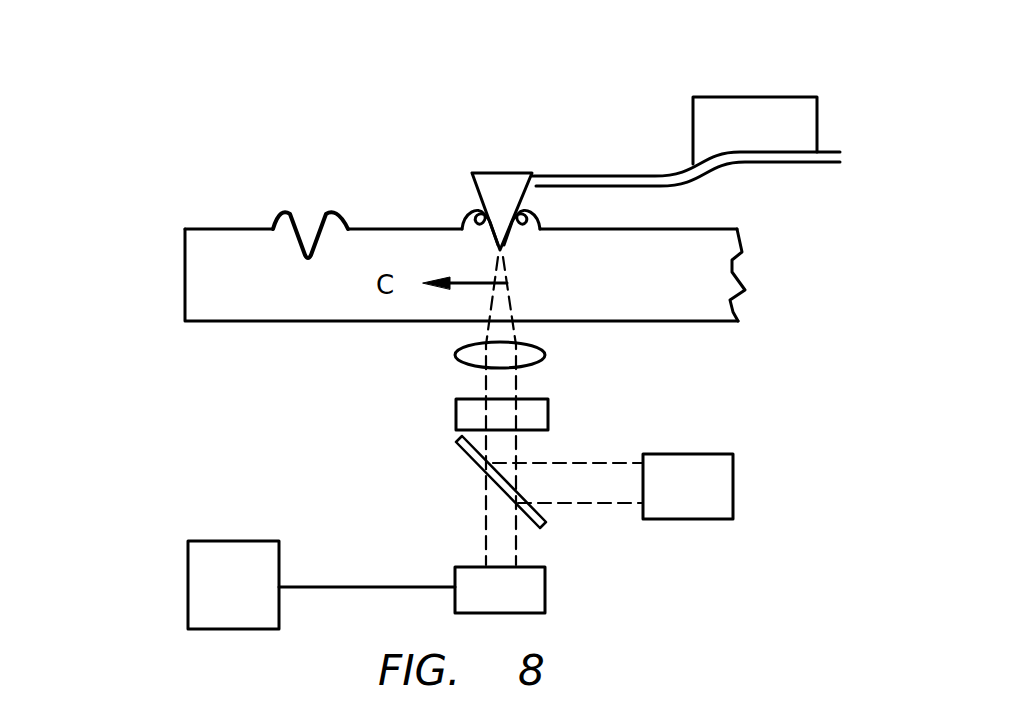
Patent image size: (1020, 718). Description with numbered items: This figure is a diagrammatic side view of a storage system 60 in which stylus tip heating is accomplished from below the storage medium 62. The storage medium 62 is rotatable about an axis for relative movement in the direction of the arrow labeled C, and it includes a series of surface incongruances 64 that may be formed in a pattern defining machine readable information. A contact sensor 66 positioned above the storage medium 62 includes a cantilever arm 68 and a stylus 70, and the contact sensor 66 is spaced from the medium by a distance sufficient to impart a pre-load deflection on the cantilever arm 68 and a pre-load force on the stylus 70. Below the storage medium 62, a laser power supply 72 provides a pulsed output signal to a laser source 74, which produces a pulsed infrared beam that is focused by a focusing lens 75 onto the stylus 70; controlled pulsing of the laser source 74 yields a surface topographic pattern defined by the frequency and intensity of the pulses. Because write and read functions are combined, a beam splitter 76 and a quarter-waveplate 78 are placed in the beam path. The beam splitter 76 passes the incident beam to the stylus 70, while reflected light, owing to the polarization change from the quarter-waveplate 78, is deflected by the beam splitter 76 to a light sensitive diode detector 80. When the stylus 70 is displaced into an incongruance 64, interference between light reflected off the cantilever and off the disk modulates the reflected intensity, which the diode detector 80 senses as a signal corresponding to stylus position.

The storage system 60 is at (178, 397).
The storage medium 62 is at (745, 260).
The surface incongruances 64 is at (302, 222).
The contact sensor 66 is at (752, 103).
The cantilever arm 68 is at (613, 176).
The stylus 70 is at (503, 214).
The laser power supply 72 is at (233, 540).
The laser source 74 is at (547, 592).
The focusing lens 75 is at (545, 353).
The beam splitter 76 is at (471, 460).
The quarter-waveplate 78 is at (548, 415).
The light sensitive diode detector 80 is at (733, 488).